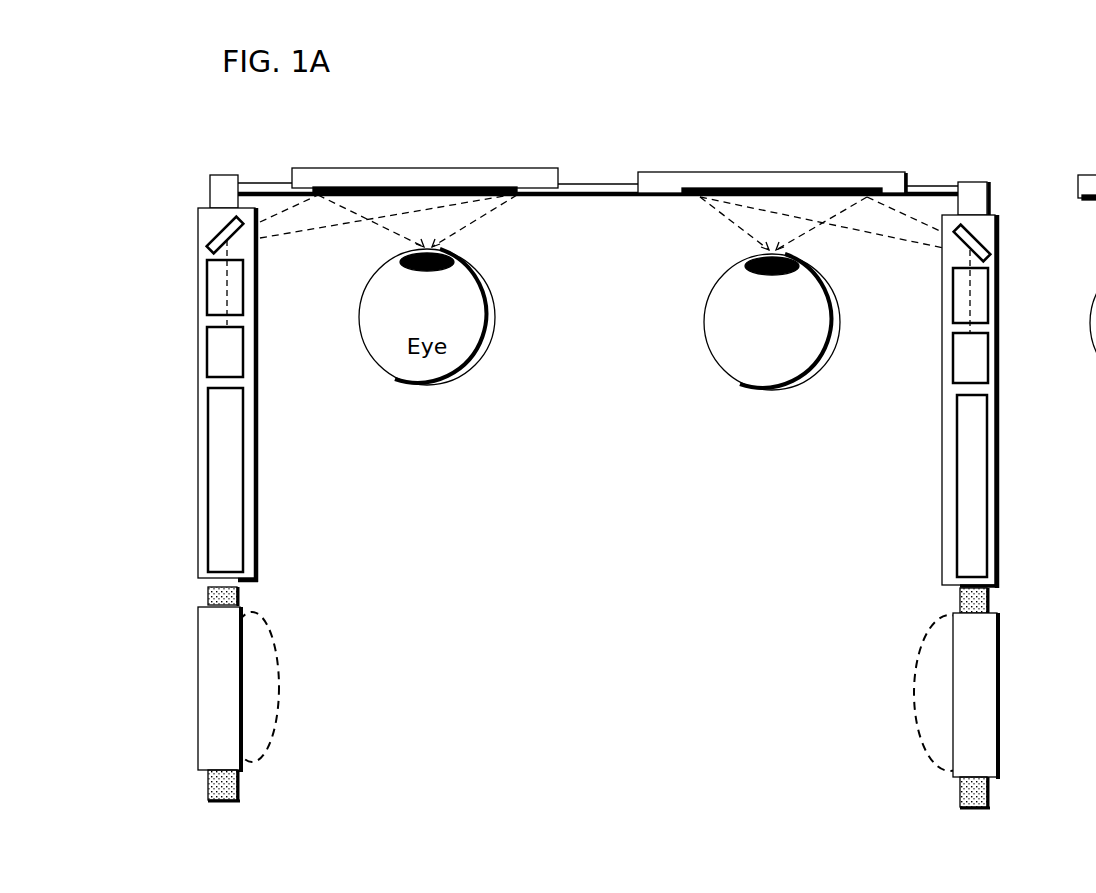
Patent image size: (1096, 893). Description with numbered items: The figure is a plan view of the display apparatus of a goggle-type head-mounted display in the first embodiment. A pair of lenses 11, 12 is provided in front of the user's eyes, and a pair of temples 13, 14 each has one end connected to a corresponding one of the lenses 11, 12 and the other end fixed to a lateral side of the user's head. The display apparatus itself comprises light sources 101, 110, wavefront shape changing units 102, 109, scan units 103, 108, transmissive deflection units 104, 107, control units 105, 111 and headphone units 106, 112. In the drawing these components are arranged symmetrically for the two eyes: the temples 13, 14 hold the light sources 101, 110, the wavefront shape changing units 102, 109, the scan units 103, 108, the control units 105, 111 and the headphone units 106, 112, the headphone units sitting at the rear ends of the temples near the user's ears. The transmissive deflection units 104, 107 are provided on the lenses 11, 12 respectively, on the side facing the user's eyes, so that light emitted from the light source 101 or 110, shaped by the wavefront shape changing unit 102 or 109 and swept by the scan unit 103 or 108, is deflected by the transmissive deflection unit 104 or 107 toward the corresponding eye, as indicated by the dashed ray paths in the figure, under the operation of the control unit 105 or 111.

The lens 11 is at (378, 168).
The lens 12 is at (838, 172).
The temple 13 is at (196, 518).
The temple 14 is at (1000, 436).
The light source 101 is at (232, 352).
The wavefront shape changing unit 102 is at (238, 295).
The scan unit 103 is at (222, 240).
The transmissive deflection unit 104 is at (430, 188).
The control unit 105 is at (228, 472).
The headphone unit 106 is at (230, 760).
The transmissive deflection unit 107 is at (715, 188).
The scan unit 108 is at (972, 235).
The wavefront shape changing unit 109 is at (958, 300).
The light source 110 is at (963, 365).
The control unit 111 is at (965, 476).
The headphone unit 112 is at (968, 690).